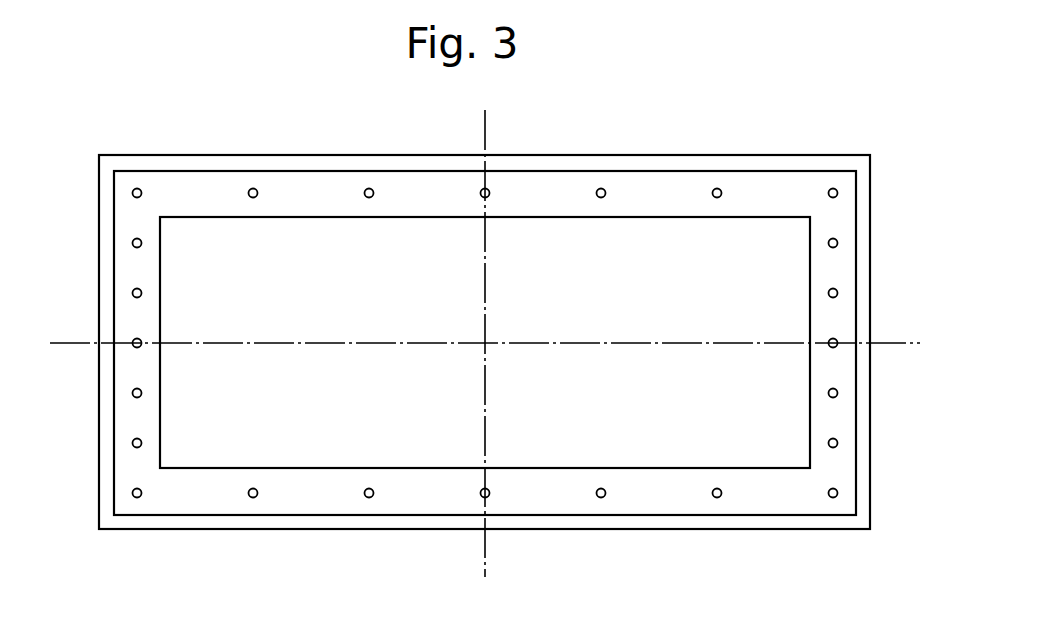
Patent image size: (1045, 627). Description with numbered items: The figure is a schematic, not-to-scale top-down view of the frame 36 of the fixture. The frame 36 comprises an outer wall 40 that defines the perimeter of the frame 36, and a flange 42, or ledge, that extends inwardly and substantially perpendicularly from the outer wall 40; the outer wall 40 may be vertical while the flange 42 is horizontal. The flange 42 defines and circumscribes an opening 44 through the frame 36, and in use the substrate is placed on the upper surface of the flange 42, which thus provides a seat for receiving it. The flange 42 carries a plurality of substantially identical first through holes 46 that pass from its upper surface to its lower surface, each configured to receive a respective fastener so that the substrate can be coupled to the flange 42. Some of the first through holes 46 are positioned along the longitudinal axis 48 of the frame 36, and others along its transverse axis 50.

The frame 36 is at (138, 118).
The outer wall 40 is at (310, 163).
The flange 42 is at (667, 185).
The opening 44 is at (622, 293).
The first through holes 46 is at (252, 189).
The longitudinal axis 48 is at (60, 341).
The transverse axis 50 is at (489, 121).